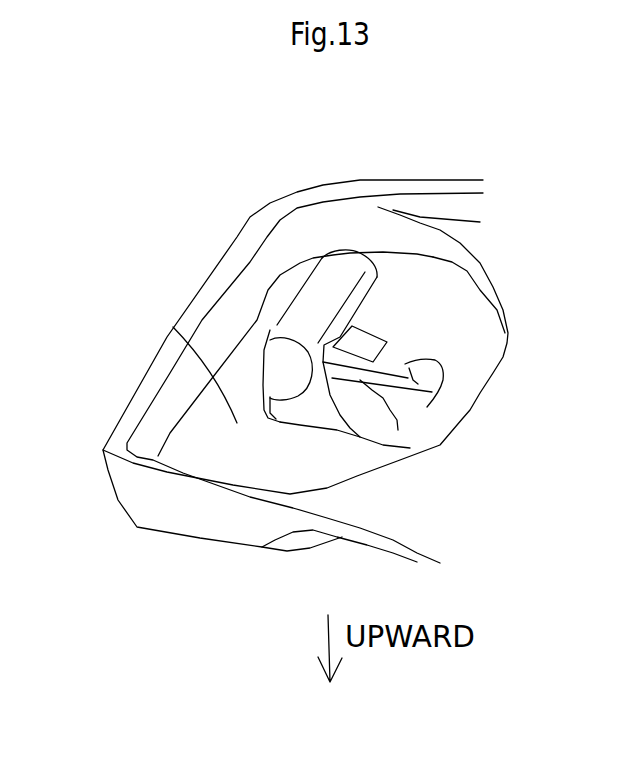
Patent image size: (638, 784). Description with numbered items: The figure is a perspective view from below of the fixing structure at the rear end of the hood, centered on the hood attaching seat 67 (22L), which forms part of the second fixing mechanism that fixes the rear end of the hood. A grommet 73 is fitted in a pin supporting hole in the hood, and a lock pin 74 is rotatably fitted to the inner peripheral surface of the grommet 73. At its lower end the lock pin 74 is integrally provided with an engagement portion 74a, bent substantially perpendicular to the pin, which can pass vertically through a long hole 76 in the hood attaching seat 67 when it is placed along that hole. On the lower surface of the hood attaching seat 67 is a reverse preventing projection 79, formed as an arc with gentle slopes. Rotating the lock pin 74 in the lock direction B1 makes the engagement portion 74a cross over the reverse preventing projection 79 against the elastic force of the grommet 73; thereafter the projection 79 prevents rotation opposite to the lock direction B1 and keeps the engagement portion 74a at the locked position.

The hood attaching seat 67 is at (271, 371).
The left operating device 22L is at (167, 333).
The engagement portion 74a is at (317, 300).
The lock pin 74 is at (410, 448).
The reverse preventing projection 79 is at (448, 348).
The long hole 76 is at (410, 362).
The grommet 73 is at (423, 398).
The lock direction B1 is at (385, 292).